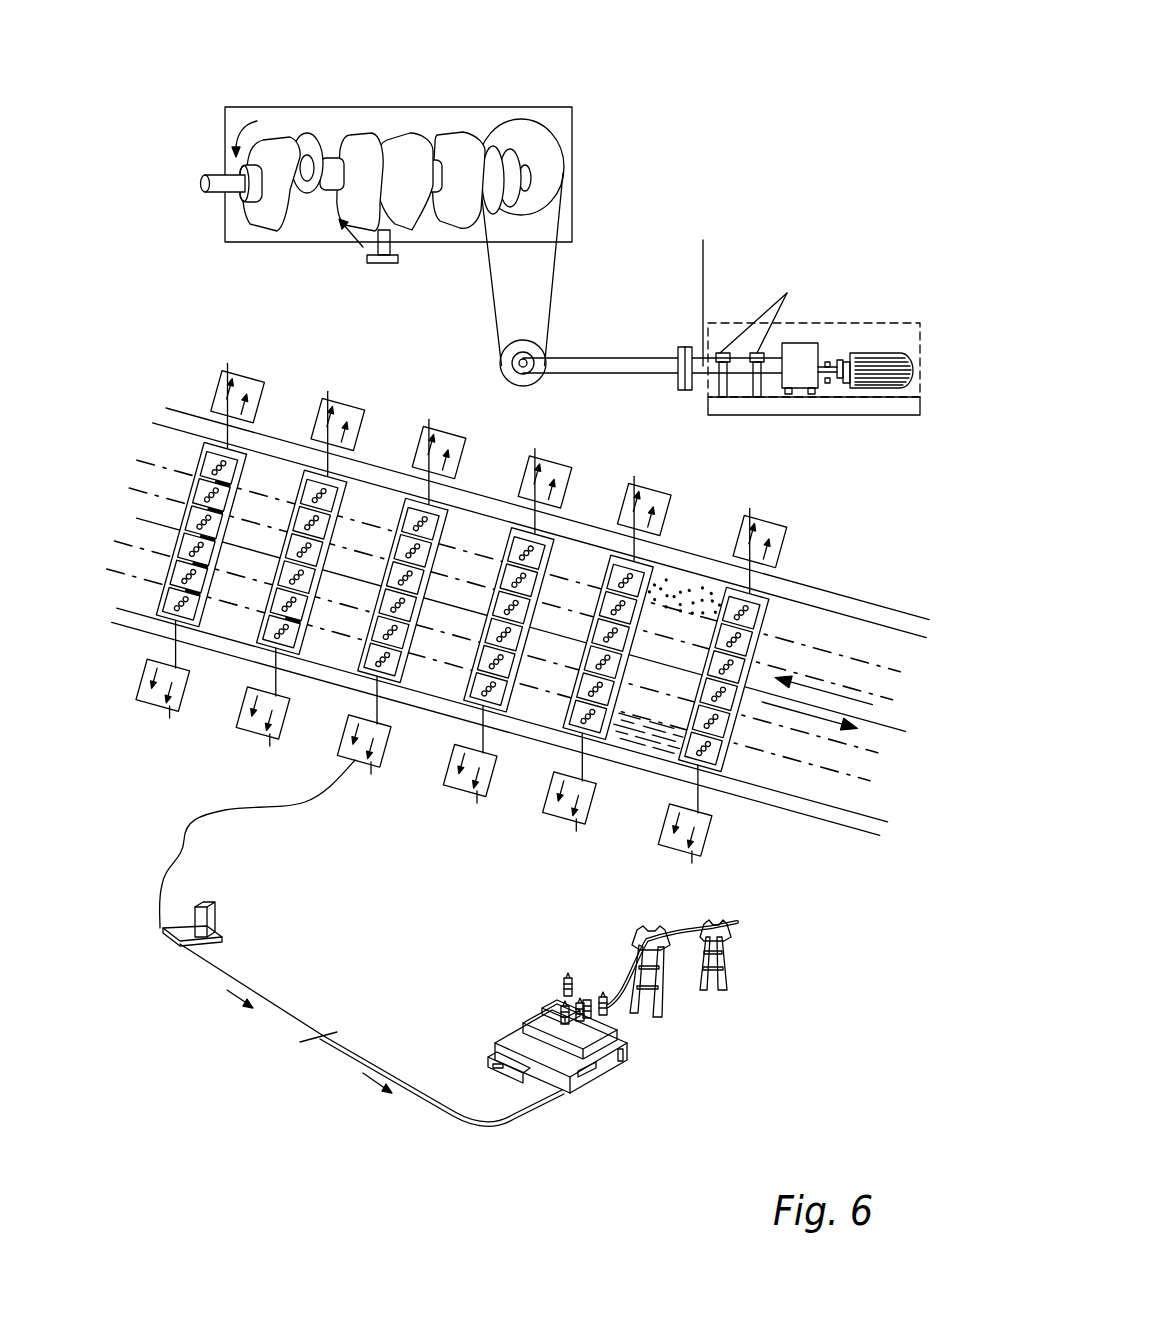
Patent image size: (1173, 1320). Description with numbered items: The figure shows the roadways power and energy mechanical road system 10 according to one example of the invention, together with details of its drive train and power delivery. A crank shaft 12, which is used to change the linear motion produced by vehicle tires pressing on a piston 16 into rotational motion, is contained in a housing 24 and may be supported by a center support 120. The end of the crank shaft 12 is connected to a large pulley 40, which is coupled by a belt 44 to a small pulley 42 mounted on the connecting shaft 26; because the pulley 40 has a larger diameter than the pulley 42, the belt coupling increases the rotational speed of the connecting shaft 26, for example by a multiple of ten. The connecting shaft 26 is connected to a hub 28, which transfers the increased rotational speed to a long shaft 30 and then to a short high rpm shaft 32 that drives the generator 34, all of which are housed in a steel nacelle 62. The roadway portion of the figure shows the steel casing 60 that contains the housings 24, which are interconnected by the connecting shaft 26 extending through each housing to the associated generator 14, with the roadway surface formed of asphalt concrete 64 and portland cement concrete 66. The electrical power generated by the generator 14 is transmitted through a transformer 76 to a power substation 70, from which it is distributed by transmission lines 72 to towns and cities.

The wave energy system 10 is at (797, 78).
The crank shaft 12 is at (300, 218).
The center support 120 is at (368, 258).
The pulley 40 is at (548, 157).
The housing 24 is at (575, 220).
The belt 44 is at (486, 262).
The pulley 42 is at (506, 352).
The connecting shaft 26 is at (598, 374).
The hub 28 is at (680, 348).
The steel nacelle 62 is at (833, 320).
The long shaft 30 is at (737, 378).
The generator 14 is at (782, 403).
The short high rpm shaft 32 is at (833, 385).
The generator 34 is at (888, 352).
The steel casing 60 is at (197, 486).
The asphalt concrete 64 is at (733, 585).
The piston 16 is at (739, 628).
The portland cement concrete 66 is at (690, 758).
The transformer 76 is at (220, 937).
The transmission lines 72 is at (616, 1008).
The power substation 70 is at (603, 1068).